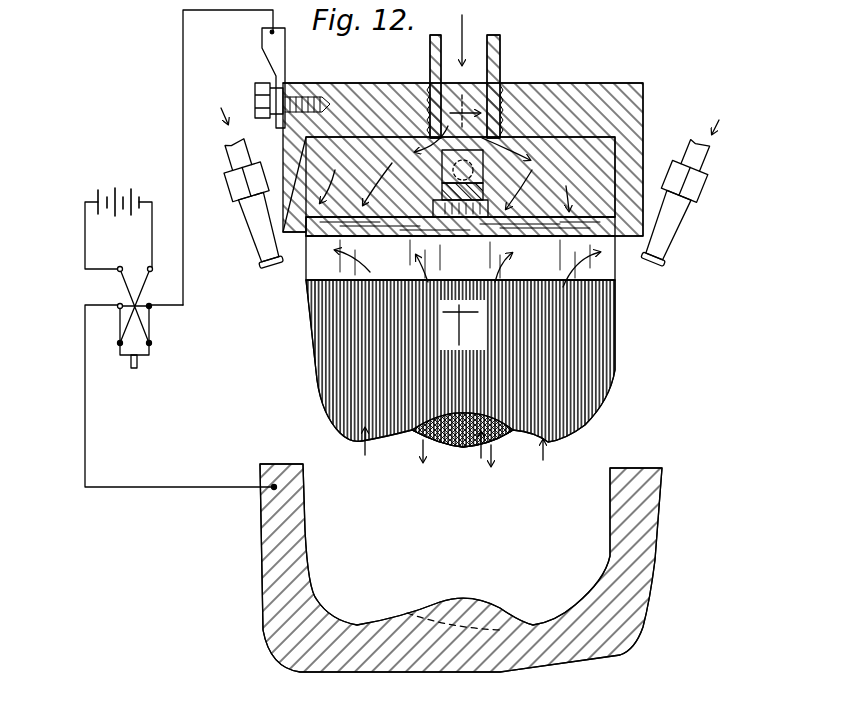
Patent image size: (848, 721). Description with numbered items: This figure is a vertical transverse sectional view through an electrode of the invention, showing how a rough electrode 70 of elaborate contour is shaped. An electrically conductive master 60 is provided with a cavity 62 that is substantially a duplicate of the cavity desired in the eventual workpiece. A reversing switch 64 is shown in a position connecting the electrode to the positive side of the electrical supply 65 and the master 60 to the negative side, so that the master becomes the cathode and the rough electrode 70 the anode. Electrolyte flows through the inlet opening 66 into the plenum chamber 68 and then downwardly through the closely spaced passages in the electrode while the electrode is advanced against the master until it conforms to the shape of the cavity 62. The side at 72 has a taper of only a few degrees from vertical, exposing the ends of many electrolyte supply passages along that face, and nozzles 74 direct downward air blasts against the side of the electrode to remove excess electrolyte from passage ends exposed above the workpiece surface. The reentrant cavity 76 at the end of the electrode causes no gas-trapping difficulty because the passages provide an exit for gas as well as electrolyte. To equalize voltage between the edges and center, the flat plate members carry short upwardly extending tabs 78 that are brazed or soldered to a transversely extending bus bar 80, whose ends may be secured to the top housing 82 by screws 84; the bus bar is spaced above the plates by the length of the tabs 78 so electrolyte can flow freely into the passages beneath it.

The electrically conductive master 60 is at (282, 565).
The cavity 62 is at (611, 506).
The reversing switch 64 is at (150, 321).
The electrical supply 65 is at (121, 190).
The inlet opening 66 is at (484, 44).
The plenum chamber 68 is at (578, 171).
The rough electrode 70 is at (627, 360).
The tapered side of the electrode 72 is at (316, 378).
The nozzles 74 is at (252, 238).
The reentrant cavity 76 is at (447, 447).
The tabs 78 is at (435, 207).
The bus bar 80 is at (484, 192).
The top housing 82 is at (635, 128).
The screws 84 is at (442, 170).